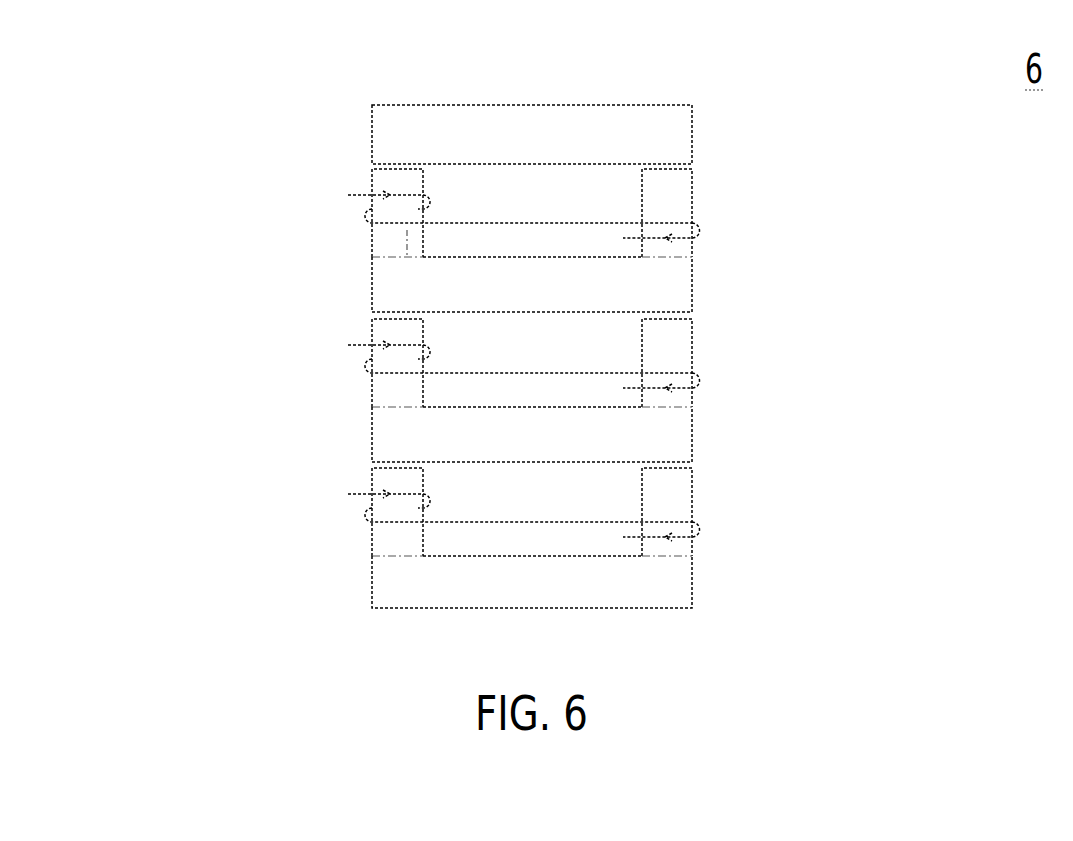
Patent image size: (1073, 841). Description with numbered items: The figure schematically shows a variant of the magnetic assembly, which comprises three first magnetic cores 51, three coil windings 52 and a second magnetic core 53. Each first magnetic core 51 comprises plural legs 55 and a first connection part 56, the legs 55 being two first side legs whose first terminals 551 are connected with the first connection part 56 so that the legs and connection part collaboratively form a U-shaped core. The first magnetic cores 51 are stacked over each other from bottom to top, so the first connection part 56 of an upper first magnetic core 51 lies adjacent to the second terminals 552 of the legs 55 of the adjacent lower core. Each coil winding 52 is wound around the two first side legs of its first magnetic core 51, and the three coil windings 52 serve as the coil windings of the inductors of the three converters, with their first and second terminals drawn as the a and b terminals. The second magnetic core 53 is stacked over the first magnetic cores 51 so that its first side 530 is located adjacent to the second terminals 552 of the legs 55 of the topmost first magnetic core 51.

The second magnetic core 53 is at (690, 88).
The first side 530 is at (685, 152).
The first magnetic core 51 is at (740, 323).
The coil winding 52 is at (507, 205).
The leg 55 is at (403, 255).
The first terminal 551 is at (667, 250).
The second terminal 552 is at (667, 171).
The first connection part 56 is at (663, 298).